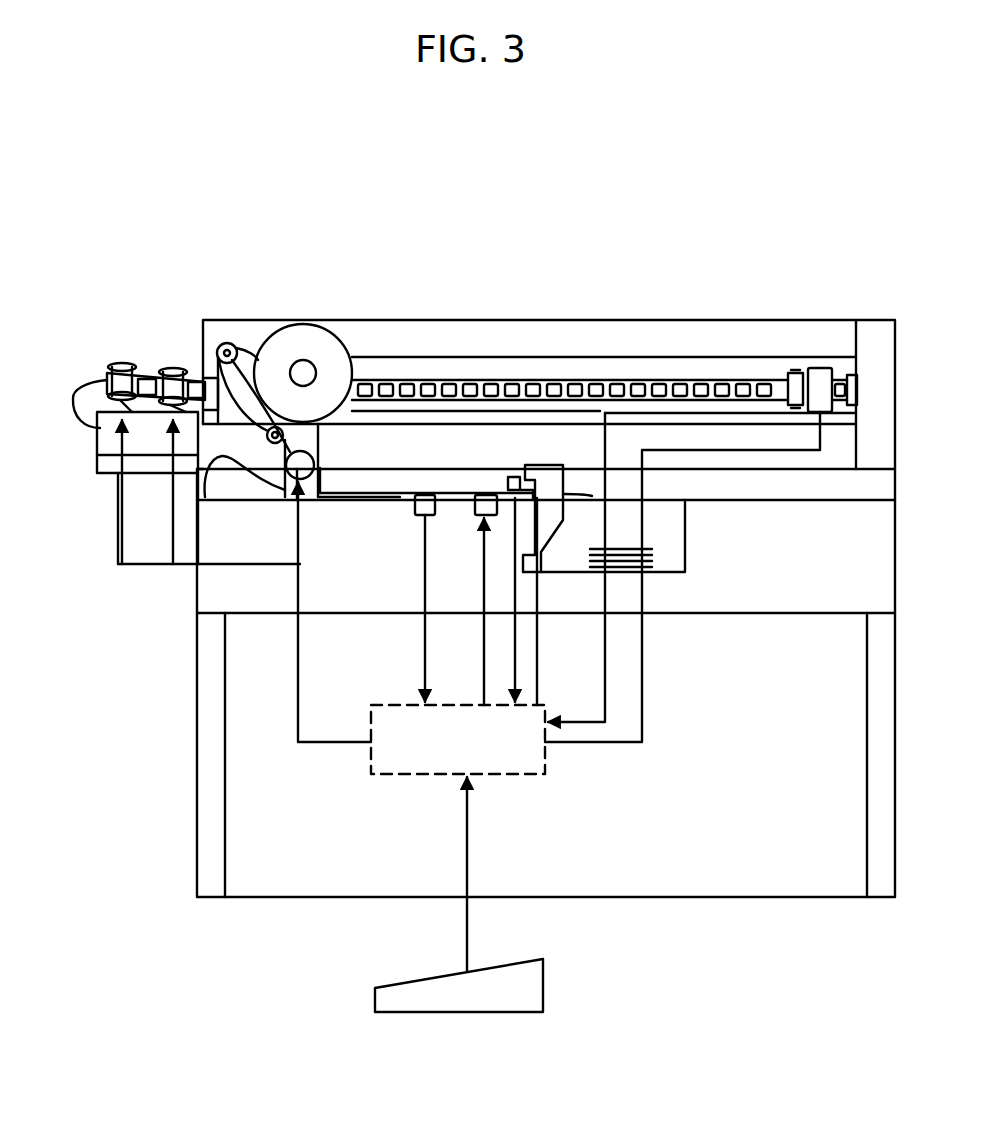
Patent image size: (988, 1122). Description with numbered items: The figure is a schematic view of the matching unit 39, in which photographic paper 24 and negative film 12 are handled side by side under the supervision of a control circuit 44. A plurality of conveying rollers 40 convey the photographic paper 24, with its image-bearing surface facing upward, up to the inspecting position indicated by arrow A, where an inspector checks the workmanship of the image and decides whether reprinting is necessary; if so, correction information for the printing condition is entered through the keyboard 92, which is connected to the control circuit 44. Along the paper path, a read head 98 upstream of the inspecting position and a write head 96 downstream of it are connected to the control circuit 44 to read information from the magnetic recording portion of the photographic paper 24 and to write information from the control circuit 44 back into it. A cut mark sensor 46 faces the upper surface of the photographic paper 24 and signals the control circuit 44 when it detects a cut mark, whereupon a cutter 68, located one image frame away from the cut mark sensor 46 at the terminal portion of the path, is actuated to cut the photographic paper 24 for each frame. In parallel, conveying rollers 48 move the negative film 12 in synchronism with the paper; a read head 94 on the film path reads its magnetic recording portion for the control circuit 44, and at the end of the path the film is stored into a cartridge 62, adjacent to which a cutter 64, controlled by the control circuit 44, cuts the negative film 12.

The matching unit 39 is at (525, 262).
The conveying rollers 48 is at (116, 366).
The negative film 12 is at (425, 379).
The read head 94 is at (793, 370).
The cutter 64 is at (820, 367).
The cartridge 62 is at (857, 383).
The conveying rollers 40 is at (316, 460).
The inspecting position A is at (457, 486).
The photographic paper 24 is at (350, 499).
The cut mark sensor 46 is at (506, 474).
The cutter 68 is at (546, 466).
The read head 98 is at (414, 520).
The write head 96 is at (476, 522).
The control circuit 44 is at (410, 777).
The keyboard 92 is at (545, 990).